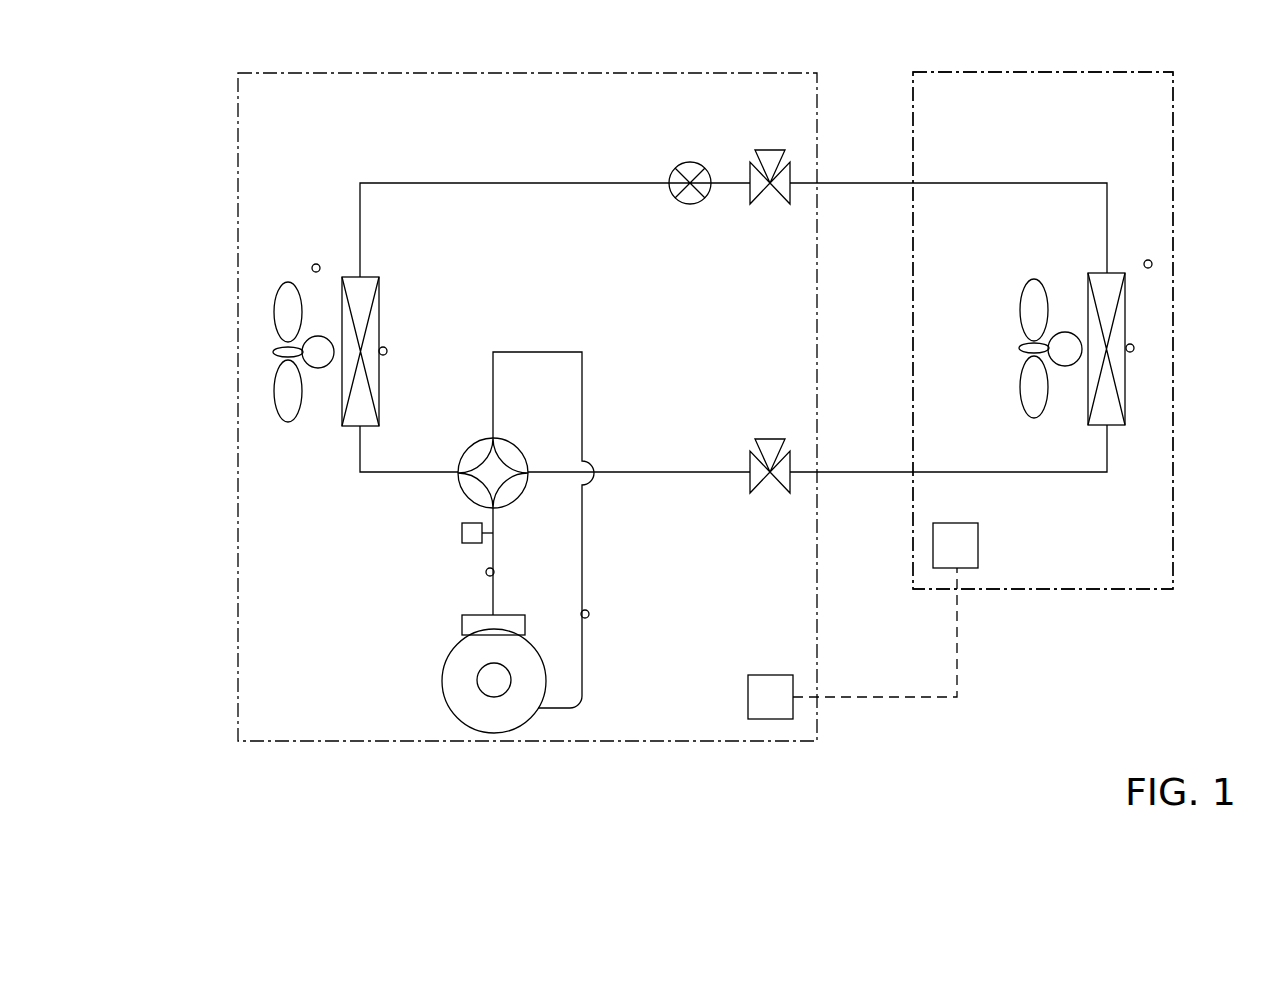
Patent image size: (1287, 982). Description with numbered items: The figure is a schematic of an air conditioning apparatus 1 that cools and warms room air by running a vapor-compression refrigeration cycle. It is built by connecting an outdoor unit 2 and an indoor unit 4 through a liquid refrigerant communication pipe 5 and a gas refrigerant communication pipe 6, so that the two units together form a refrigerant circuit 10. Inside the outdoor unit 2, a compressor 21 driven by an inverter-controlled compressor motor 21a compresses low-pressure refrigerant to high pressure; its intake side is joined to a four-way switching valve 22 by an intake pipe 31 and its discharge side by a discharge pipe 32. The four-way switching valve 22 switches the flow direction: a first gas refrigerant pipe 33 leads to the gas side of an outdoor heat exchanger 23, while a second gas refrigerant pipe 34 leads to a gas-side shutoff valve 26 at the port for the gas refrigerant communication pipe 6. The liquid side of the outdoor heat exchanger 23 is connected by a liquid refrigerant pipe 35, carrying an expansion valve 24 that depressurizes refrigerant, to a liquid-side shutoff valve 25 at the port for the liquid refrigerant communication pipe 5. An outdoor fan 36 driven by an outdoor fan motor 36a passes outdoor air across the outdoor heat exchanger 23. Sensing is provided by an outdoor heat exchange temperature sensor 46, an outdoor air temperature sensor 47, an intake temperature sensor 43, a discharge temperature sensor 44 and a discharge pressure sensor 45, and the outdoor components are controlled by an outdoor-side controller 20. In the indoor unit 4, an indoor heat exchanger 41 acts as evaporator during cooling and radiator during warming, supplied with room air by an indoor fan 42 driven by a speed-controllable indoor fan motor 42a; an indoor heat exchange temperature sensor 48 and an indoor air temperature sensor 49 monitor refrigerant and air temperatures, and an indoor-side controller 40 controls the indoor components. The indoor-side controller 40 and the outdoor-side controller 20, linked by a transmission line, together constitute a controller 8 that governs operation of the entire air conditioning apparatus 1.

The air conditioning apparatus 1 is at (1193, 112).
The outdoor unit 2 is at (236, 118).
The indoor unit 4 is at (1178, 560).
The liquid refrigerant communication pipe 5 is at (865, 182).
The gas refrigerant communication pipe 6 is at (865, 471).
The controller 8 is at (968, 690).
The refrigerant circuit 10 is at (322, 180).
The outdoor-side controller 20 is at (746, 697).
The compressor 21 is at (442, 678).
The compressor motor 21a is at (480, 692).
The four-way switching valve 22 is at (520, 438).
The outdoor heat exchanger 23 is at (368, 276).
The expansion valve 24 is at (690, 205).
The liquid-side shutoff valve 25 is at (767, 200).
The gas-side shutoff valve 26 is at (767, 492).
The intake pipe 31 is at (584, 650).
The discharge pipe 32 is at (492, 593).
The first gas refrigerant pipe 33 is at (373, 474).
The second gas refrigerant pipe 34 is at (698, 474).
The liquid refrigerant pipe 35 is at (358, 232).
The outdoor fan 36 is at (276, 408).
The outdoor fan motor 36a is at (320, 369).
The indoor-side controller 40 is at (980, 540).
The indoor heat exchanger 41 is at (1114, 272).
The indoor fan 42 is at (1021, 298).
The indoor fan motor 42a is at (1065, 367).
The intake temperature sensor 43 is at (589, 614).
The discharge temperature sensor 44 is at (486, 572).
The discharge pressure sensor 45 is at (460, 533).
The outdoor heat exchange temperature sensor 46 is at (388, 351).
The outdoor air temperature sensor 47 is at (312, 268).
The indoor heat exchange temperature sensor 48 is at (1135, 348).
The indoor air temperature sensor 49 is at (1153, 264).